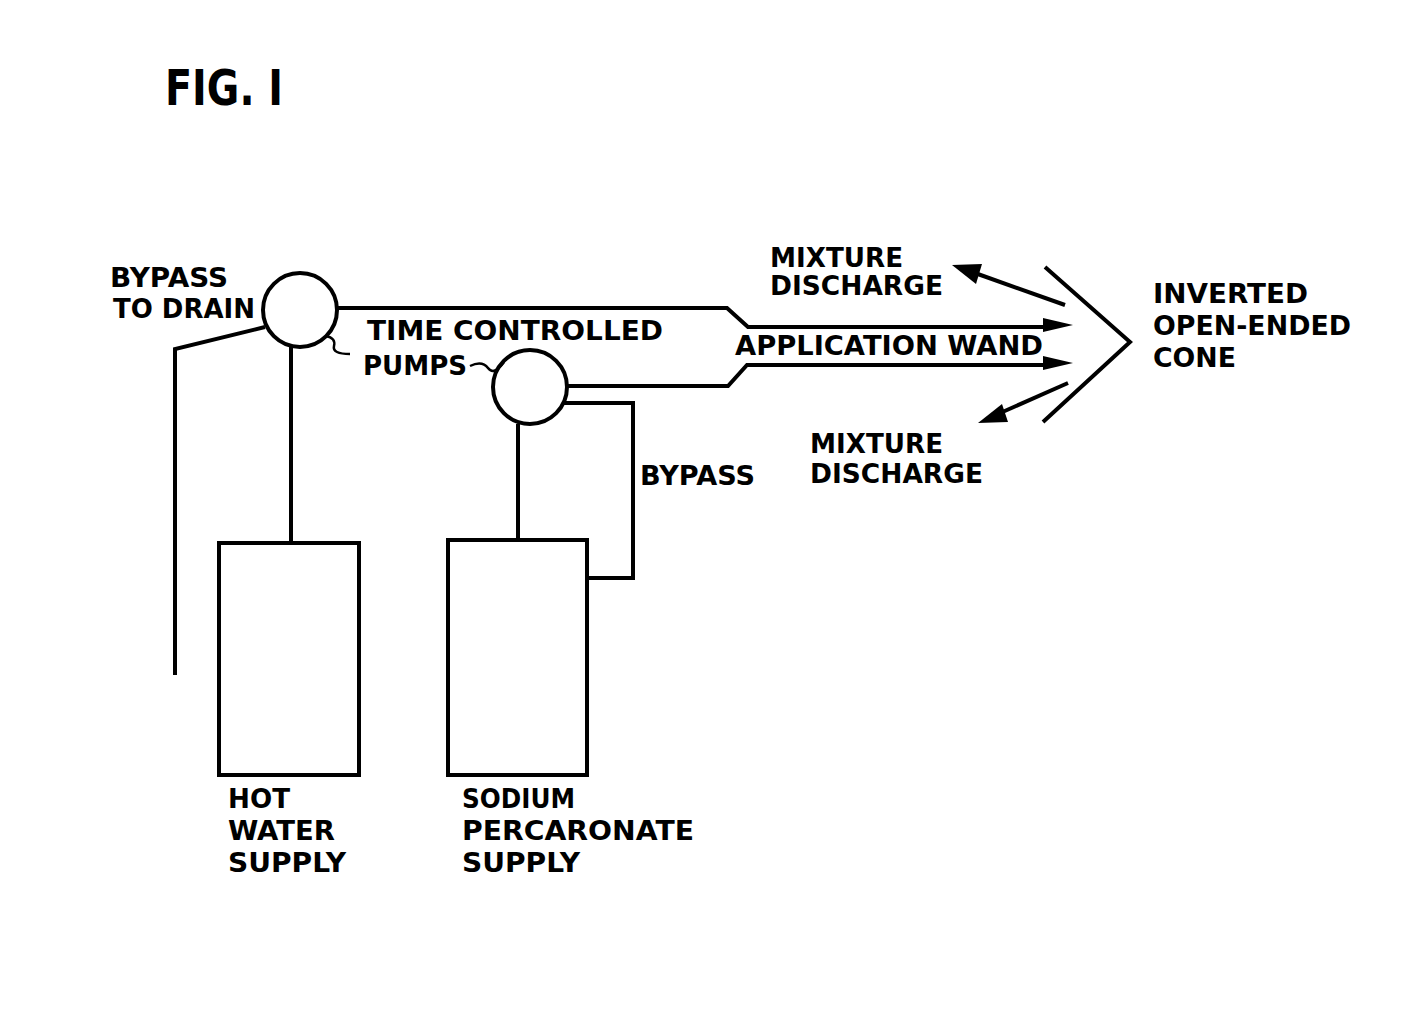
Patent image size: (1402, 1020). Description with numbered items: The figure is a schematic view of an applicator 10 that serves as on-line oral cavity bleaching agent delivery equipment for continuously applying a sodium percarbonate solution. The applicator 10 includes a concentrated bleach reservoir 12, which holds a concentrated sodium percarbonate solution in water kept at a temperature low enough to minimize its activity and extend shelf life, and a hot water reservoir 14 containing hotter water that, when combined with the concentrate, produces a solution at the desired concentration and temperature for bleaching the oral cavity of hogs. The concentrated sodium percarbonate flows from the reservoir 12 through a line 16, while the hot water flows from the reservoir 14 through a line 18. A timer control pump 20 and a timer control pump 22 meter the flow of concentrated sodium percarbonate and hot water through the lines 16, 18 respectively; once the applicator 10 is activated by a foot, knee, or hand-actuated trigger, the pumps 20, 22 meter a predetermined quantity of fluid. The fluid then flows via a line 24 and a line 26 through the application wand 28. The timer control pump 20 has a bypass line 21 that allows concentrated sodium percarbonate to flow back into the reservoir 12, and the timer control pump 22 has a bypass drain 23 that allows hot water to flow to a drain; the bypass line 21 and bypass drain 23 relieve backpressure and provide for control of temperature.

The applicator 10 is at (480, 201).
The concentrated bleach reservoir 12 is at (587, 683).
The hot water reservoir 14 is at (219, 728).
The line 16 is at (518, 474).
The line 18 is at (291, 478).
The timer control pump 20 is at (566, 380).
The bypass line 21 is at (633, 548).
The timer control pump 22 is at (318, 278).
The bypass drain 23 is at (175, 475).
The line 24 is at (712, 390).
The line 26 is at (694, 306).
The application wand 28 is at (866, 366).